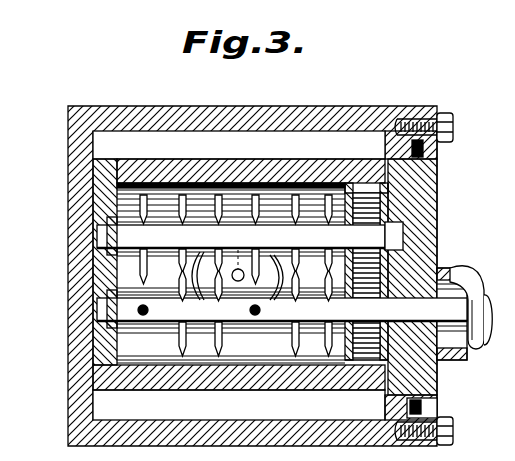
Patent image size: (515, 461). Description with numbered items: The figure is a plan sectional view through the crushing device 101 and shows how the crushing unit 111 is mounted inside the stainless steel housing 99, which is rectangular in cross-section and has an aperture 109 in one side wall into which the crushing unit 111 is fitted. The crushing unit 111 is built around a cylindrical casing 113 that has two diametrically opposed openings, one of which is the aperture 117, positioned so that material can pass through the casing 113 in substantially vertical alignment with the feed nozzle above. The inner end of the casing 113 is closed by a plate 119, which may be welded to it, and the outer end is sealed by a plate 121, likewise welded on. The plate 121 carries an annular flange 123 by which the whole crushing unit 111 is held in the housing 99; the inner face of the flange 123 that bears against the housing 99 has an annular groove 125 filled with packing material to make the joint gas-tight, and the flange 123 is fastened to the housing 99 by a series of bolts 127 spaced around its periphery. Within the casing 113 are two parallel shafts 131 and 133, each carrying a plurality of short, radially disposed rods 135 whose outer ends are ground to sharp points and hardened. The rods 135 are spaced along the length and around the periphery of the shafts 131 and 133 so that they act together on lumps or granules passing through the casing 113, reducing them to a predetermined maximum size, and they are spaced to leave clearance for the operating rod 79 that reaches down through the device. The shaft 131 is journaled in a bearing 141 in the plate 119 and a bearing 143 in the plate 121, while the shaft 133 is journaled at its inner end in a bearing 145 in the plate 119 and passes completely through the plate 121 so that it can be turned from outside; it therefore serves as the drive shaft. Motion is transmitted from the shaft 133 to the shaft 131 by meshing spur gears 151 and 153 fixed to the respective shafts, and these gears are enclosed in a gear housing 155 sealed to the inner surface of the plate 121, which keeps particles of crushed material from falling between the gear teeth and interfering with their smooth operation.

The operating rod 79 is at (237, 225).
The housing 99 is at (68, 253).
The crushing device 101 is at (130, 283).
The aperture 109 is at (437, 157).
The crushing unit 111 is at (440, 218).
The cylindrical casing 113 is at (165, 158).
The aperture 117 is at (283, 322).
The plate 119 is at (93, 396).
The plate 121 is at (428, 381).
The annular flange 123 is at (423, 107).
The annular groove 125 is at (421, 405).
The bolts 127 is at (455, 128).
The shaft 131 is at (97, 232).
The shaft 133 is at (117, 325).
The short rods 135 is at (332, 192).
The bearing 141 is at (113, 210).
The bearing 143 is at (390, 266).
The bearing 145 is at (113, 345).
The spur gear 151 is at (358, 193).
The spur gear 153 is at (366, 360).
The gear housing 155 is at (380, 181).